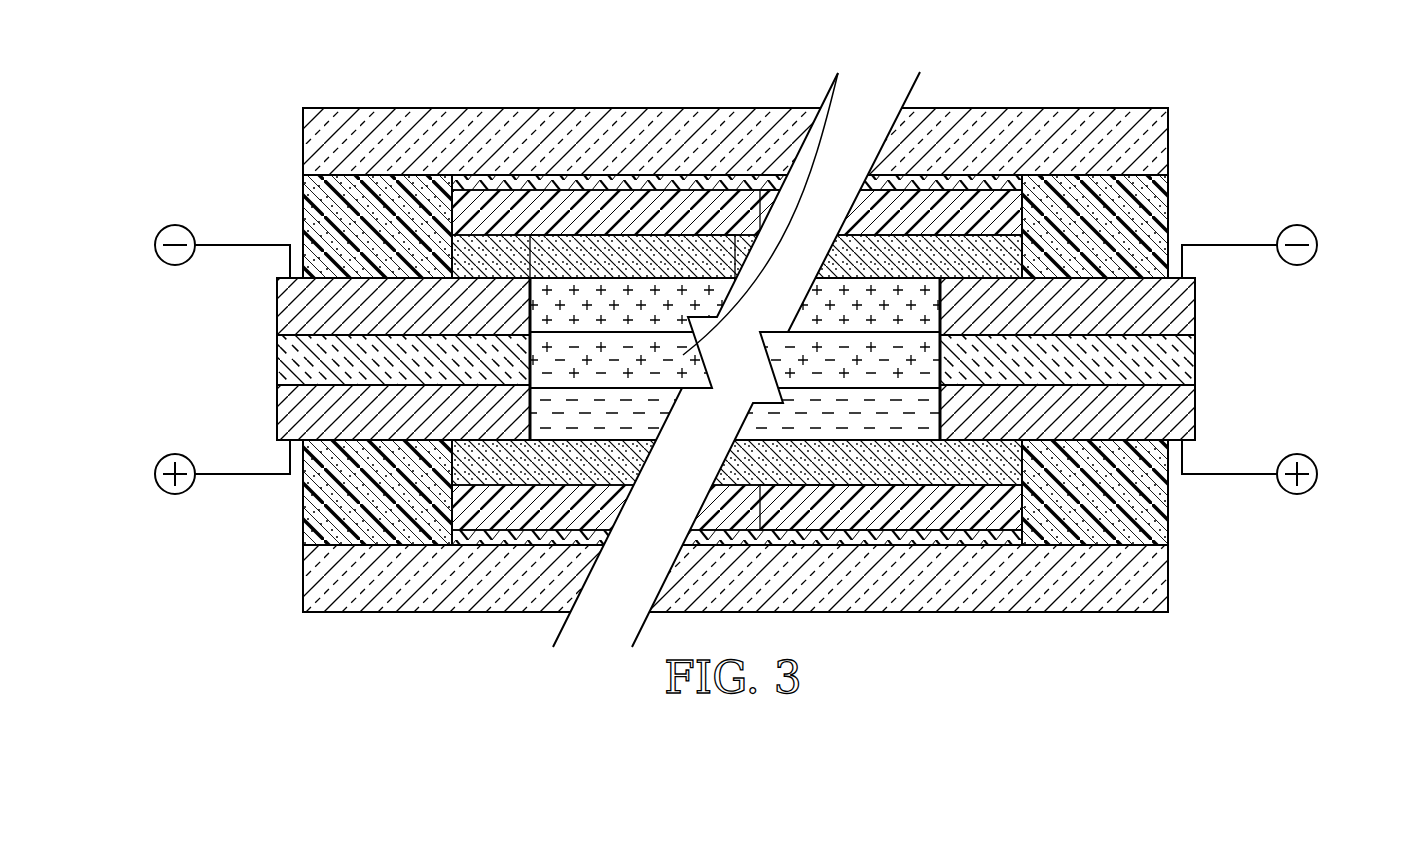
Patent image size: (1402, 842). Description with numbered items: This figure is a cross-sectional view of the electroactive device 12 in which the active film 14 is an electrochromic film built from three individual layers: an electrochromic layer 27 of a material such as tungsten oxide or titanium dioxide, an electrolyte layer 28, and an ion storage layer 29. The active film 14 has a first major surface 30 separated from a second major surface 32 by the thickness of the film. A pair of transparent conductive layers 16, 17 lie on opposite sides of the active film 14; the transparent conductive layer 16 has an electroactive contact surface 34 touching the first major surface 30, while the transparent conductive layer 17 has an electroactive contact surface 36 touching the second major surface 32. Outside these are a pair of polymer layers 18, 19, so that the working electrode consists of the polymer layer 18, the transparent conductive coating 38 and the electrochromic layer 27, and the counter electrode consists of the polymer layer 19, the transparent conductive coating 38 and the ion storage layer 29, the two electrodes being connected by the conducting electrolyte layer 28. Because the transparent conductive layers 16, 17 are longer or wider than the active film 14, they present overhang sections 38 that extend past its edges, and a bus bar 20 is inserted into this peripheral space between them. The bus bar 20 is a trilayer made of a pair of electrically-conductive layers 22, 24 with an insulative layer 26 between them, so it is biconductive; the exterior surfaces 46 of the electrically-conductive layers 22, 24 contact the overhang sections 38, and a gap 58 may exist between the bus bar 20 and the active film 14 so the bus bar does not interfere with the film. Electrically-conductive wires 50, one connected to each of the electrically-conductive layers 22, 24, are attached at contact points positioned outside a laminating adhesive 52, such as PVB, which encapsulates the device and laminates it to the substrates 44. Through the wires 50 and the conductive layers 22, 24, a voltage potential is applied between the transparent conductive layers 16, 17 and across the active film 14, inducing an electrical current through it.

The electroactive device 12 is at (1285, 160).
The active film 14 is at (863, 313).
The transparent conductive layer 16 is at (658, 250).
The transparent conductive layer 17 is at (820, 478).
The polymer layer 18 is at (983, 200).
The polymer layer 19 is at (890, 510).
The bus bar 20 is at (170, 340).
The electrically-conductive layer 22 is at (292, 303).
The electrically-conductive layer 24 is at (292, 404).
The insulative layer 26 is at (292, 356).
The electrochromic layer 27 is at (705, 293).
The electrolyte layer 28 is at (788, 330).
The ion storage layer 29 is at (772, 430).
The first major surface 30 is at (548, 272).
The second major surface 32 is at (520, 495).
The electroactive contact surface 34 is at (587, 283).
The electroactive contact surface 36 is at (590, 432).
The overhang section 38 is at (500, 252).
The substrate 44 is at (1092, 137).
The exterior surface 46 is at (288, 268).
The electrically-conductive wire 50 is at (222, 243).
The laminating adhesive 52 is at (373, 200).
The gap 58 is at (940, 315).